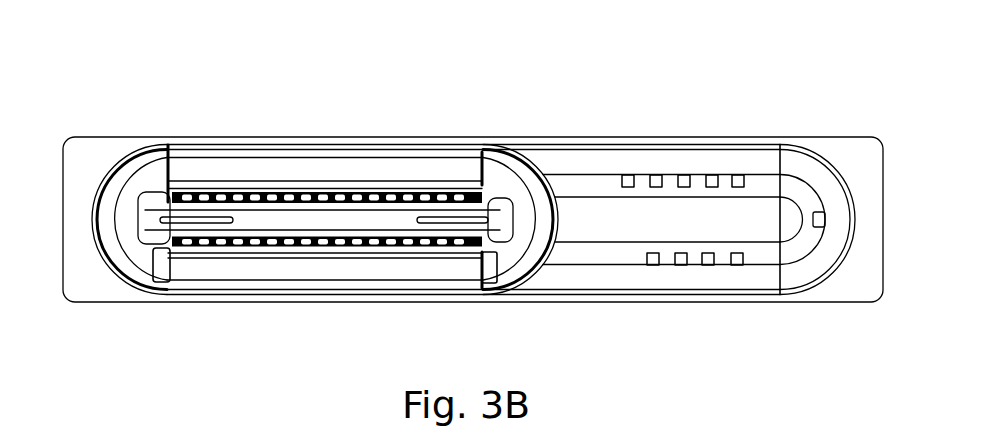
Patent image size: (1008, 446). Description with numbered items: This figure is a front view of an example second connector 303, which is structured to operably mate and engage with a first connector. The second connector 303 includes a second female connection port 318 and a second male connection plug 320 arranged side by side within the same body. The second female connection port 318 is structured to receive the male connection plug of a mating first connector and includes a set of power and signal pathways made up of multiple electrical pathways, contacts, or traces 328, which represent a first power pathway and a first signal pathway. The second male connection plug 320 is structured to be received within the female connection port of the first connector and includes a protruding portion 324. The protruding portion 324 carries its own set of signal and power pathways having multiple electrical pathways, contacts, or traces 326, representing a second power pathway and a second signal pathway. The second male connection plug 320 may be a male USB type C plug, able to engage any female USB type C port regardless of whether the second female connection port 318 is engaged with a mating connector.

The second connector 303 is at (113, 103).
The second female connection port 318 is at (746, 216).
The second male connection plug 320 is at (400, 176).
The protruding portion 324 is at (286, 218).
The electrical pathways, contacts, or traces 326 is at (308, 244).
The electrical pathways, contacts, or traces 328 is at (690, 178).